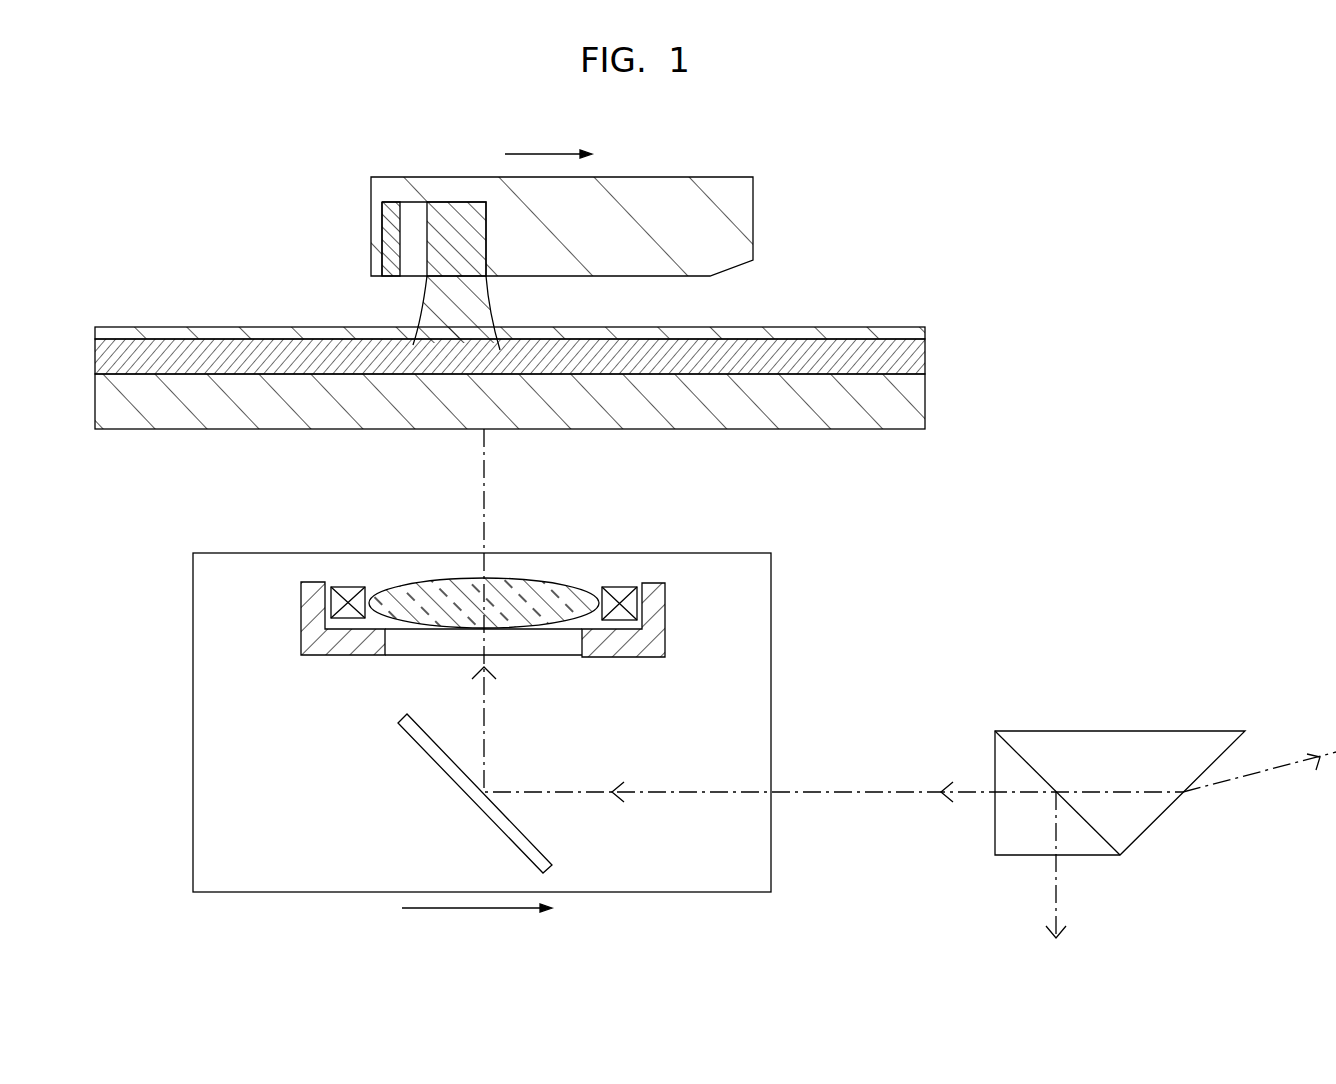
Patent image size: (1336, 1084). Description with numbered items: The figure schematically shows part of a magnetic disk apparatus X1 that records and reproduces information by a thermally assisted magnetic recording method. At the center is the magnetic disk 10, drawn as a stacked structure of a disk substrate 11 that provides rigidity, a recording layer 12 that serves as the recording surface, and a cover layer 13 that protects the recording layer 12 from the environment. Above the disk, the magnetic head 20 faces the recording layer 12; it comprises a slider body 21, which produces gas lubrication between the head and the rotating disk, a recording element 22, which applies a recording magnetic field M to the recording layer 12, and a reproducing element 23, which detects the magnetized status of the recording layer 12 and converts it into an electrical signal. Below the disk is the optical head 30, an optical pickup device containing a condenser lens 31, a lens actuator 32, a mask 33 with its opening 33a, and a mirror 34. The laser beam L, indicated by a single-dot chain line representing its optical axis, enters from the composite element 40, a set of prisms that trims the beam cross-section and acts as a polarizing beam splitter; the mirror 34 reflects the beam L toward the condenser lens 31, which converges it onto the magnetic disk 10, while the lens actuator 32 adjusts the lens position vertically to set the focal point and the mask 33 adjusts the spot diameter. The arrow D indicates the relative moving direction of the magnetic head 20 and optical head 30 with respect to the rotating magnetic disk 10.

The magnetic disk apparatus X1 is at (165, 240).
The magnetic disk 10 is at (886, 312).
The disk substrate 11 is at (912, 398).
The recording layer 12 is at (916, 357).
The cover layer 13 is at (916, 334).
The magnetic head 20 is at (365, 172).
The slider body 21 is at (740, 198).
The recording element 22 is at (477, 224).
The reproducing element 23 is at (389, 246).
The optical head 30 is at (190, 588).
The condenser lens 31 is at (420, 590).
The lens actuator 32 is at (348, 598).
The mask 33 is at (315, 650).
The opening of lens holder 33a is at (510, 646).
The mirror 34 is at (428, 750).
The composite element 40 is at (1128, 735).
The laser beam L is at (495, 478).
The recording magnetic field M is at (435, 292).
The relative moving direction D is at (548, 138).